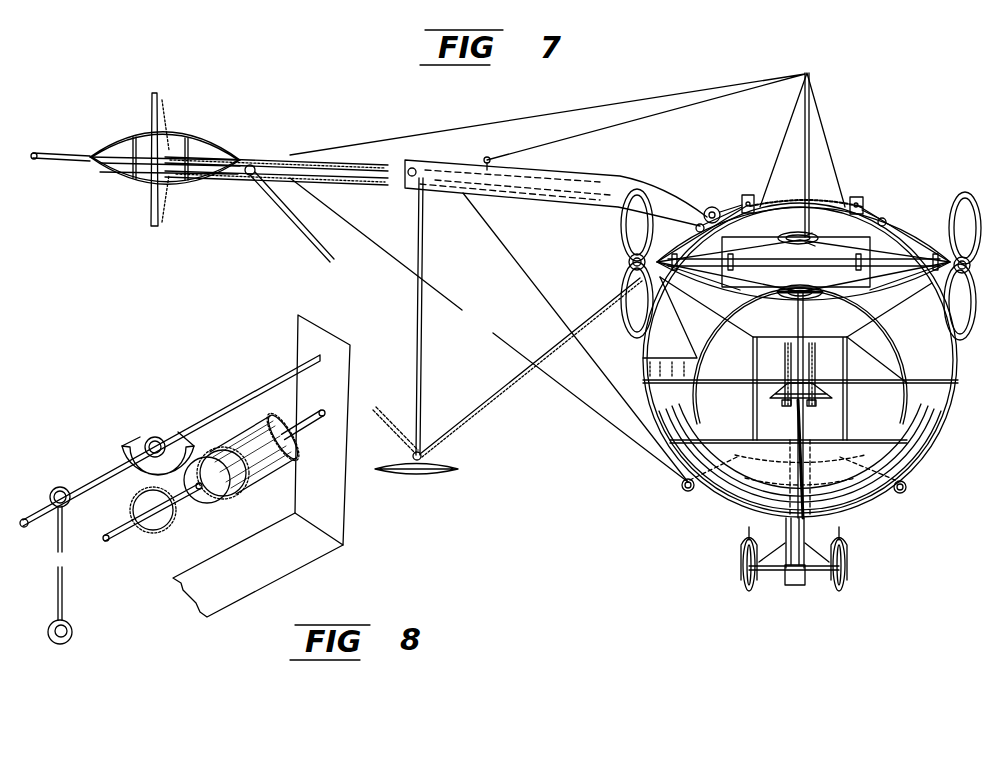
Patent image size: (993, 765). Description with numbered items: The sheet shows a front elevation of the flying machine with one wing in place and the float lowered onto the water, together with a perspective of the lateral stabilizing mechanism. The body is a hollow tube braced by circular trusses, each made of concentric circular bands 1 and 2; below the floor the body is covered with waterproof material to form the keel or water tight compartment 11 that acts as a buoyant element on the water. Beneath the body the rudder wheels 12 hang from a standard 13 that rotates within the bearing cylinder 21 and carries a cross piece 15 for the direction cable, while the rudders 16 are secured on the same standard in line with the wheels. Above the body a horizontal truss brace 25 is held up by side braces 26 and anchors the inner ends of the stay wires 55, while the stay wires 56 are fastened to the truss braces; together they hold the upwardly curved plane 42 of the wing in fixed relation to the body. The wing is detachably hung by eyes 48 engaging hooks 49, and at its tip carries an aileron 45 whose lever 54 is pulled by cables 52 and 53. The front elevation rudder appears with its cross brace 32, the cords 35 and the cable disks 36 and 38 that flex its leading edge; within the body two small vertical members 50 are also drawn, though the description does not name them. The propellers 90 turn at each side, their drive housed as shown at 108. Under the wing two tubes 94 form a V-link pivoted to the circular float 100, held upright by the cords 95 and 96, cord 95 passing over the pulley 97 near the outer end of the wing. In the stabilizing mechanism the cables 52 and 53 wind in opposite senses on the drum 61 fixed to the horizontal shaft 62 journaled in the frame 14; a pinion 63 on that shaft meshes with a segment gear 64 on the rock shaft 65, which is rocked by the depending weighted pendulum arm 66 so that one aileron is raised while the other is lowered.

In FIG. 7, the circular band 1 is at (648, 367).
In FIG. 7, the circular band 2 is at (703, 330).
In FIG. 7, the keel or water tight compartment 11 is at (904, 458).
In FIG. 7, the rudder wheels 12 is at (742, 591).
In FIG. 7, the standard 13 is at (804, 552).
In FIG. 8, the frame 14 is at (261, 466).
In FIG. 7, the cross piece 15 is at (808, 400).
In FIG. 7, the rudders 16 is at (740, 556).
In FIG. 7, the bearing cylinder 21 is at (806, 430).
In FIG. 7, the horizontal truss brace 25 is at (812, 104).
In FIG. 7, the side braces 26 is at (784, 148).
In FIG. 7, the cross brace 32 is at (708, 289).
In FIG. 7, the cords 35 is at (792, 241).
In FIG. 7, the cable disk 36 is at (808, 242).
In FIG. 7, the cable disk 38 is at (804, 284).
In FIG. 7, the upwardly curved plane 42 is at (612, 176).
In FIG. 7, the aileron 45 is at (88, 153).
In FIG. 7, the eyes 48 is at (712, 207).
In FIG. 7, the hooks 49 is at (697, 230).
In FIG. 7, the columns 50 is at (783, 362).
In FIG. 7, the cable 52 is at (161, 120).
In FIG. 8, the cable 52 is at (238, 497).
In FIG. 8, the cable 53 is at (282, 427).
In FIG. 7, the lever 54 is at (151, 111).
In FIG. 7, the stay wires 55 is at (546, 146).
In FIG. 7, the stay wires 56 is at (508, 268).
In FIG. 8, the drum 61 is at (260, 486).
In FIG. 8, the horizontal shaft 62 is at (128, 536).
In FIG. 8, the pinion 63 is at (172, 523).
In FIG. 8, the segment gear 64 is at (168, 438).
In FIG. 8, the rock shaft 65 is at (102, 470).
In FIG. 8, the weighted pendulum arm 66 is at (56, 557).
In FIG. 7, the propeller 90 is at (628, 230).
In FIG. 7, the tubes 94 is at (423, 357).
In FIG. 7, the cord 95 is at (316, 251).
In FIG. 7, the cord 96 is at (492, 406).
In FIG. 7, the pulley 97 is at (262, 174).
In FIG. 7, the float 100 is at (424, 473).
In FIG. 7, the housing 108 is at (628, 263).